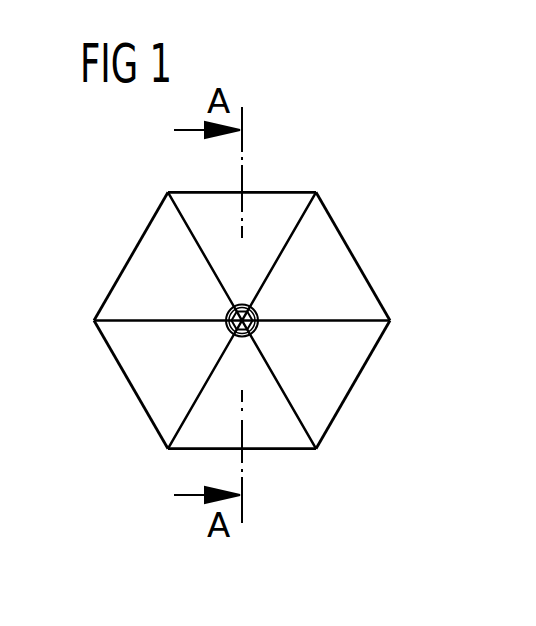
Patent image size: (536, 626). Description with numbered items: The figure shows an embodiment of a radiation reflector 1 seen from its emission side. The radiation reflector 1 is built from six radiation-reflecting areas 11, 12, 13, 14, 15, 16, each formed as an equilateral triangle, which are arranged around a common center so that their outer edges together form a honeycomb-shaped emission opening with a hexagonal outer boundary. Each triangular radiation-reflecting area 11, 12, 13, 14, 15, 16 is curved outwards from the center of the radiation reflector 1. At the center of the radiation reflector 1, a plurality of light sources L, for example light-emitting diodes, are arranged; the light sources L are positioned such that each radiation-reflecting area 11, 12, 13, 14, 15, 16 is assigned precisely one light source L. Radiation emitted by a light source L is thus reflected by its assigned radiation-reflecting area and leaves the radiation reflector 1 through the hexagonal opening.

The radiation reflector 1 is at (350, 156).
The radiation-reflecting area 11 is at (272, 205).
The radiation-reflecting area 12 is at (340, 260).
The radiation-reflecting area 13 is at (342, 383).
The radiation-reflecting area 14 is at (278, 437).
The radiation-reflecting area 15 is at (138, 382).
The radiation-reflecting area 16 is at (140, 258).
The light source L is at (260, 330).